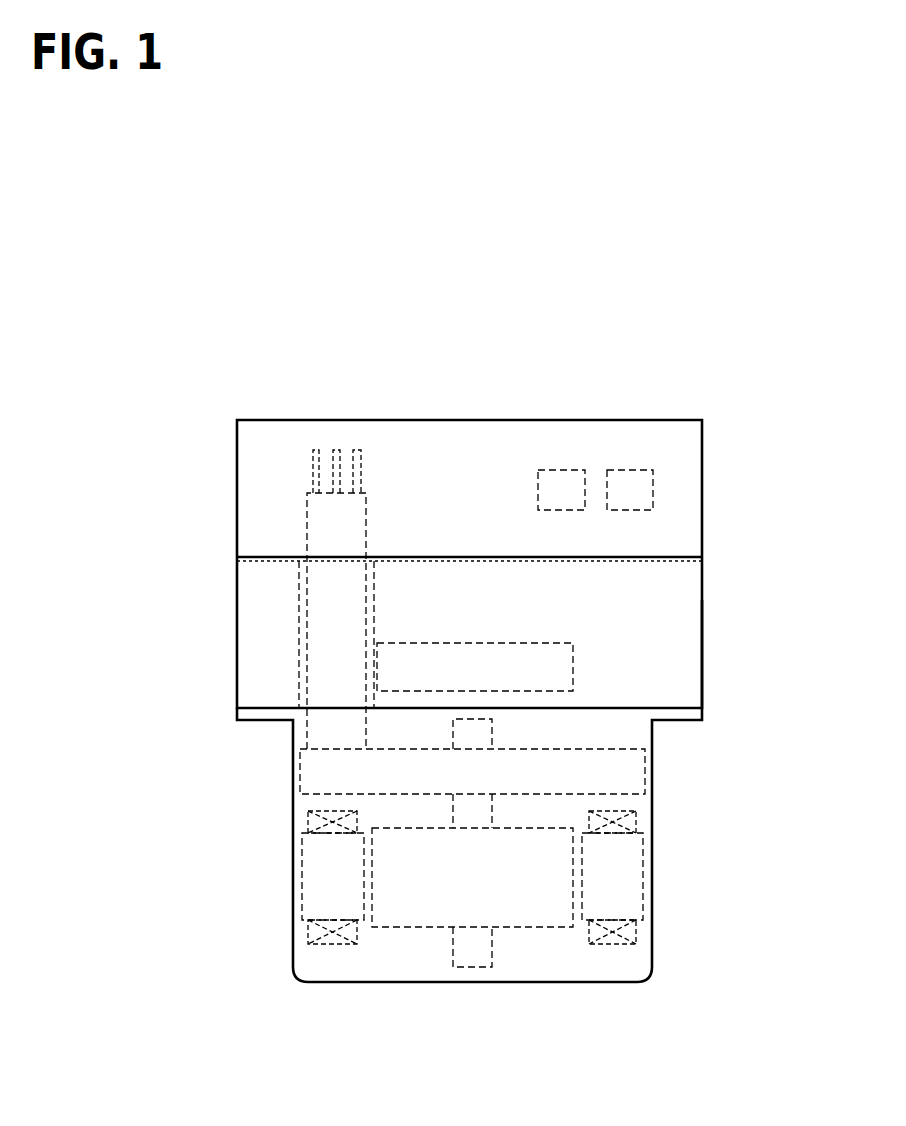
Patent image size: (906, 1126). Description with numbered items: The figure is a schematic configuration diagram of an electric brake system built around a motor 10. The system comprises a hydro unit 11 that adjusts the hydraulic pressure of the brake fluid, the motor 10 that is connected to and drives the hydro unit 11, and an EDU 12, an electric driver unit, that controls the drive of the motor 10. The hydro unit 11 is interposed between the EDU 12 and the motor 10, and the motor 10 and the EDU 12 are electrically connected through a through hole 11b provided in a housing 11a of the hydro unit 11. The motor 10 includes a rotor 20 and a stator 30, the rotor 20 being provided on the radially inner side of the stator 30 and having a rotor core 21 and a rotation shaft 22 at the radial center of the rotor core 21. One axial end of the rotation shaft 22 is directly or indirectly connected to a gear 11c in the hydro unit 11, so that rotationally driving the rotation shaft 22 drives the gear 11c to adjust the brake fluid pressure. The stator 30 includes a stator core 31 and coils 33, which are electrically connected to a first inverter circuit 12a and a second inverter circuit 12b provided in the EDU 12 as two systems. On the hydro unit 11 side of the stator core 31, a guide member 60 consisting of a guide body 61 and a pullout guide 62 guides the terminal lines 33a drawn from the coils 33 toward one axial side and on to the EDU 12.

The motor 10 is at (645, 768).
The hydro unit 11 is at (682, 596).
The housing 11a is at (702, 662).
The through hole 11b is at (360, 604).
The gear 11c is at (538, 643).
The EDU 12 is at (690, 478).
The first inverter circuit 12a is at (559, 470).
The second inverter circuit 12b is at (627, 470).
The rotor 20 is at (495, 940).
The rotor core 21 is at (433, 928).
The rotation shaft 22 is at (492, 733).
The stator 30 is at (511, 881).
The stator core 31 is at (643, 858).
The coils 33 is at (636, 930).
The terminal lines 33a is at (361, 462).
The guide member 60 is at (454, 845).
The guide body 61 is at (300, 768).
The pullout guide 62 is at (366, 507).